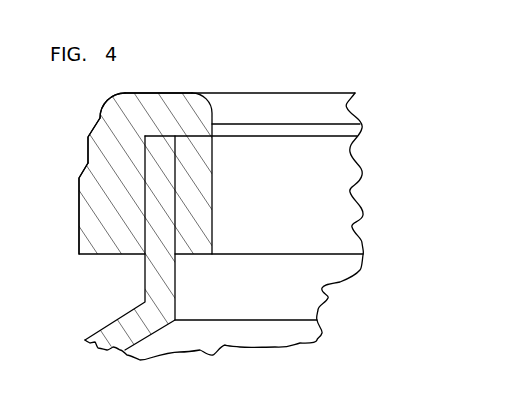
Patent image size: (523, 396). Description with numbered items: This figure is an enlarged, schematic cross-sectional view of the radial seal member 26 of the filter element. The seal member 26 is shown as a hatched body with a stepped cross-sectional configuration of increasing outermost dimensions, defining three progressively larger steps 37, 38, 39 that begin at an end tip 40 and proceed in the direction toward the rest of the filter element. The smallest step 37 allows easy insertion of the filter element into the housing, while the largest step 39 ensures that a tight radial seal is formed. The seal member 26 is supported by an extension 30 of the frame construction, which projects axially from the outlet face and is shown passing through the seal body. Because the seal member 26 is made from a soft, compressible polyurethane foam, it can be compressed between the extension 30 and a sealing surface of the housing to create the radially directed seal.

The radial seal member 26 is at (92, 98).
The extension 30 is at (172, 243).
The smallest step 37 is at (100, 117).
The step 38 is at (88, 153).
The largest step 39 is at (80, 202).
The end tip 40 is at (157, 93).